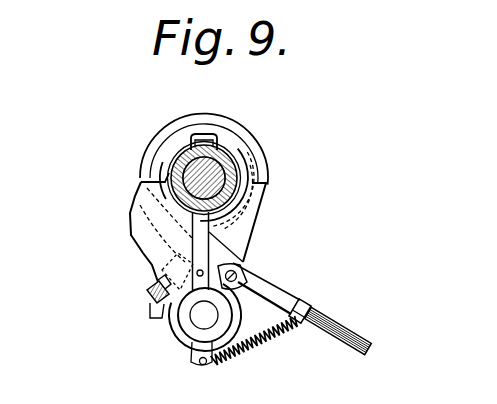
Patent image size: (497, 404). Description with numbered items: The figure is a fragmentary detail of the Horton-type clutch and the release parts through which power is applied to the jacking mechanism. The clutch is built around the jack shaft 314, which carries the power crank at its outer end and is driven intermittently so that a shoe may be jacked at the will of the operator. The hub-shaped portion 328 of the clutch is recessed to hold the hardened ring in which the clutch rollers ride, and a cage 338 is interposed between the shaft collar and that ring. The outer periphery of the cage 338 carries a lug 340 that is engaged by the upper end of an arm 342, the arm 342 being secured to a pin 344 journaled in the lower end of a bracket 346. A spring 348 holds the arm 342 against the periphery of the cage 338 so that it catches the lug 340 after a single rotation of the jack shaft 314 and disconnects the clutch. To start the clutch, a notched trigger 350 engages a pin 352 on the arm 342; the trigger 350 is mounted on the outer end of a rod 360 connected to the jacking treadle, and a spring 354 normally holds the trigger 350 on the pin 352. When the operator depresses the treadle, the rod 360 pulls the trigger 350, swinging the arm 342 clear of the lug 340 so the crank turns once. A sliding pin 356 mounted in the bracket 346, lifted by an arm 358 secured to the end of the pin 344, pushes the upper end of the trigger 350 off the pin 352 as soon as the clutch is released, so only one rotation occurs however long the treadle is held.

The hub-shaped portion 328 is at (155, 137).
The cage 338 is at (210, 166).
The jack shaft 314 is at (232, 158).
The lug 340 is at (262, 174).
The arm 342 is at (258, 224).
The bracket 346 is at (192, 232).
The sliding pin 356 is at (150, 288).
The arm 358 is at (150, 296).
The pin 344 is at (204, 316).
The pin 352 is at (240, 258).
The notched trigger 350 is at (265, 278).
The spring 348 is at (297, 299).
The rod 360 is at (355, 337).
The spring 354 is at (290, 333).